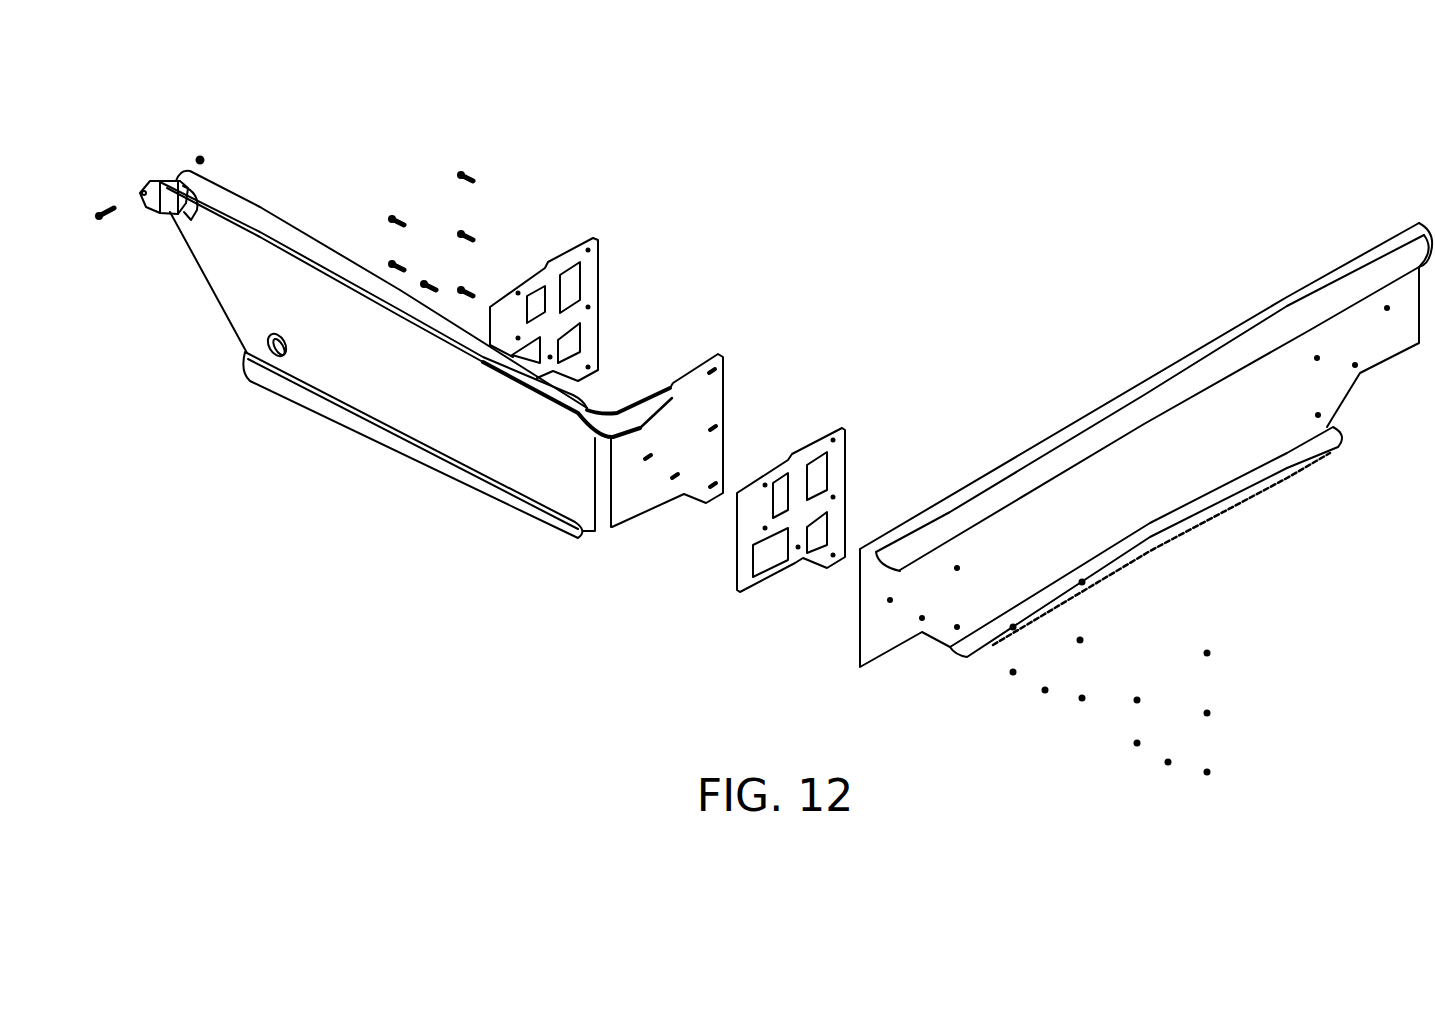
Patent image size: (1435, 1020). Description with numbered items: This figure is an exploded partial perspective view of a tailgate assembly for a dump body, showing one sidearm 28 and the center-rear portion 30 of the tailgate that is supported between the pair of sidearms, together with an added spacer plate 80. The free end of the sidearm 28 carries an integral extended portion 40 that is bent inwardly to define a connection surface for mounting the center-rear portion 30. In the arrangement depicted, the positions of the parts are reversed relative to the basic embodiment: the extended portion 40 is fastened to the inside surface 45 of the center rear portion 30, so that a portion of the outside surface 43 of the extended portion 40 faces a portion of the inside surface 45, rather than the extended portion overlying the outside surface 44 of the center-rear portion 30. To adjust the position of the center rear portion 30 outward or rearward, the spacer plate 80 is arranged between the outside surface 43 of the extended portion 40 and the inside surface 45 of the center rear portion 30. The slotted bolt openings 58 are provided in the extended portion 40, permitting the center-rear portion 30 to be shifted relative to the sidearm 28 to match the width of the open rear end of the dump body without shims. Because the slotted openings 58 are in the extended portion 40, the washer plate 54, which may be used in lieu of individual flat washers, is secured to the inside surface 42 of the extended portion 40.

The sidearm 28 is at (412, 390).
The center-rear portion 30 is at (1257, 423).
The extended portion 40 is at (623, 510).
The inside surface 42 is at (677, 377).
The outside surface 43 is at (723, 447).
The outside surface 44 is at (1083, 537).
The inside surface 45 is at (1172, 365).
The washer plate 54 is at (572, 245).
The slotted bolt openings 58 is at (723, 433).
The spacer plate 80 is at (747, 578).